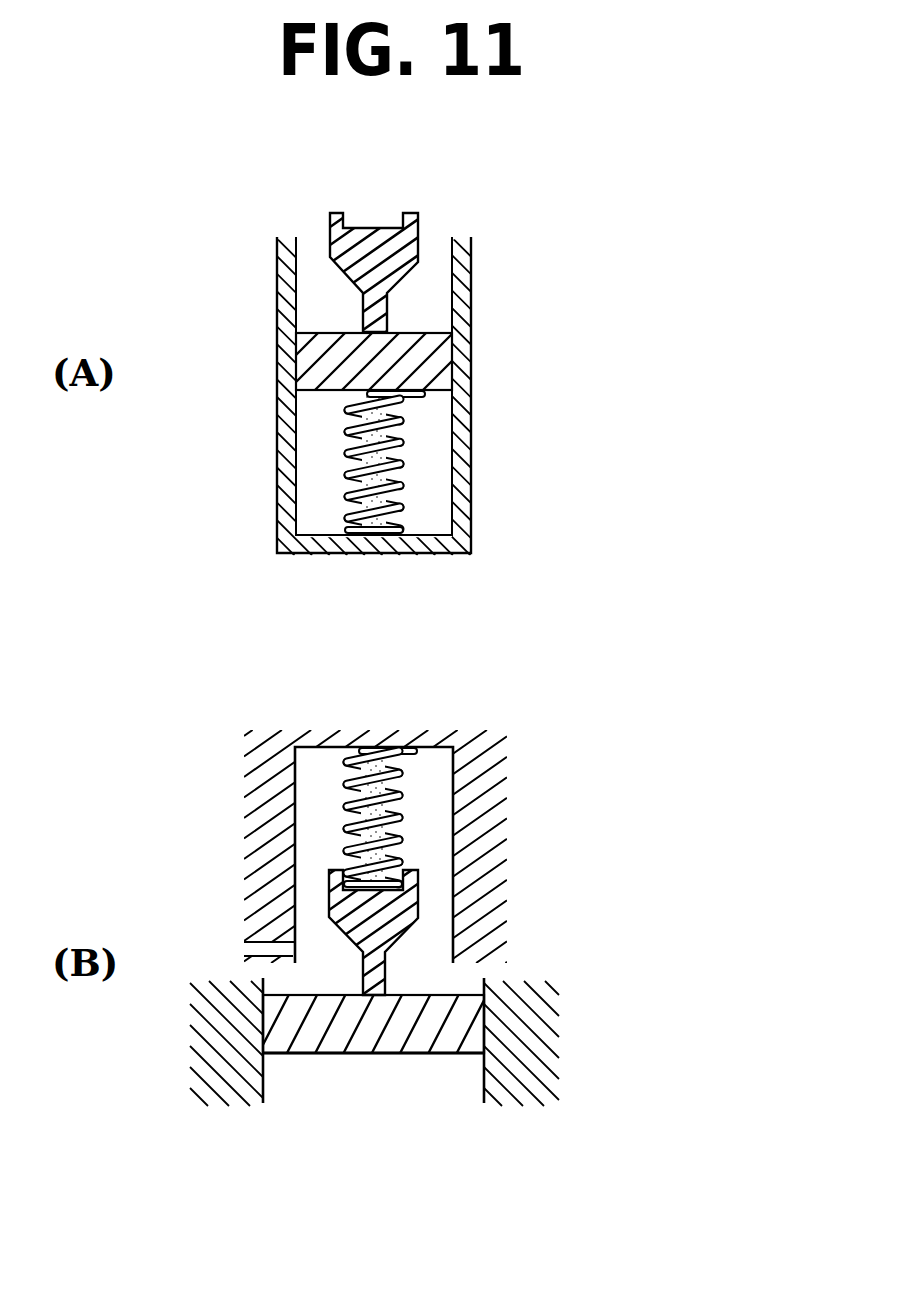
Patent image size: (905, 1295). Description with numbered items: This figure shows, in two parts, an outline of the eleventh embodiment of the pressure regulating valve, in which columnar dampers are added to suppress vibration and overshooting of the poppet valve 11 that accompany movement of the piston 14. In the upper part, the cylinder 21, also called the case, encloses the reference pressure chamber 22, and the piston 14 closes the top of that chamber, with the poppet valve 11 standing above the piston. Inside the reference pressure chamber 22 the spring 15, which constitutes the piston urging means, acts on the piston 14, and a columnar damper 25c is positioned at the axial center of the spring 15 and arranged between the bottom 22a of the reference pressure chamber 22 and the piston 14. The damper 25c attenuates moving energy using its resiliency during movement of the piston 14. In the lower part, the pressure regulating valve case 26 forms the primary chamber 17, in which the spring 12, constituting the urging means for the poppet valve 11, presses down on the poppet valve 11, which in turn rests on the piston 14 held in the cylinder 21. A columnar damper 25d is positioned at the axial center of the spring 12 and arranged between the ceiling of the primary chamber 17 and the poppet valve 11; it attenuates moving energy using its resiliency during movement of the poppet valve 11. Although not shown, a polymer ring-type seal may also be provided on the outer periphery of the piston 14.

The poppet valve 11 is at (403, 242).
The spring 12 is at (455, 772).
The piston 14 is at (440, 362).
The spring 15 is at (457, 461).
The primary chamber 17 is at (313, 806).
The cylinder 21 is at (467, 408).
The reference pressure chamber 22 is at (325, 488).
The bottom of the reference pressure chamber 22a is at (320, 530).
The columnar damper 25c is at (398, 498).
The columnar damper 25d is at (377, 745).
The pressure regulating valve case 26 is at (487, 760).